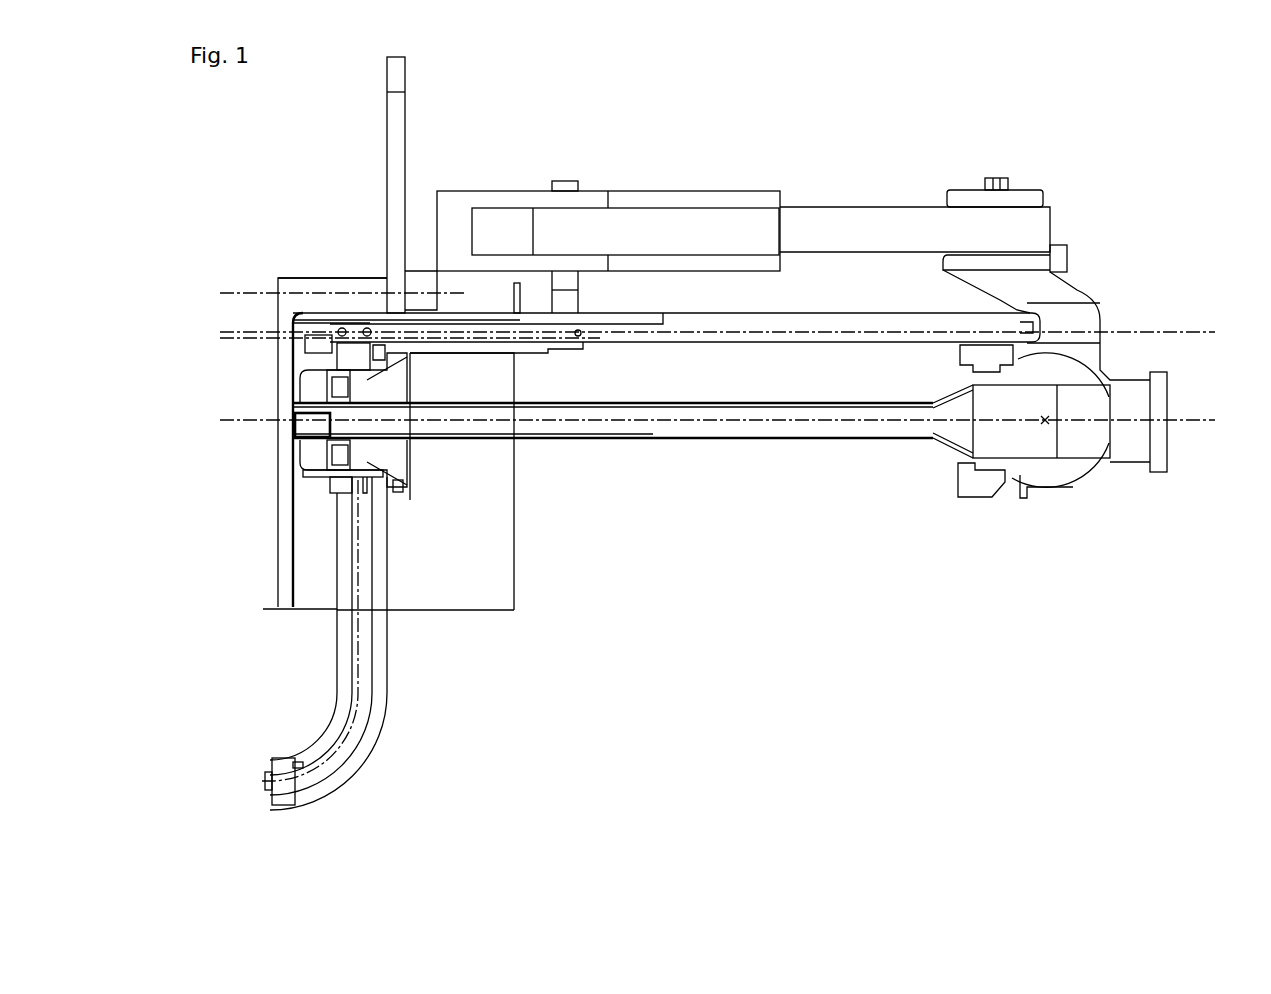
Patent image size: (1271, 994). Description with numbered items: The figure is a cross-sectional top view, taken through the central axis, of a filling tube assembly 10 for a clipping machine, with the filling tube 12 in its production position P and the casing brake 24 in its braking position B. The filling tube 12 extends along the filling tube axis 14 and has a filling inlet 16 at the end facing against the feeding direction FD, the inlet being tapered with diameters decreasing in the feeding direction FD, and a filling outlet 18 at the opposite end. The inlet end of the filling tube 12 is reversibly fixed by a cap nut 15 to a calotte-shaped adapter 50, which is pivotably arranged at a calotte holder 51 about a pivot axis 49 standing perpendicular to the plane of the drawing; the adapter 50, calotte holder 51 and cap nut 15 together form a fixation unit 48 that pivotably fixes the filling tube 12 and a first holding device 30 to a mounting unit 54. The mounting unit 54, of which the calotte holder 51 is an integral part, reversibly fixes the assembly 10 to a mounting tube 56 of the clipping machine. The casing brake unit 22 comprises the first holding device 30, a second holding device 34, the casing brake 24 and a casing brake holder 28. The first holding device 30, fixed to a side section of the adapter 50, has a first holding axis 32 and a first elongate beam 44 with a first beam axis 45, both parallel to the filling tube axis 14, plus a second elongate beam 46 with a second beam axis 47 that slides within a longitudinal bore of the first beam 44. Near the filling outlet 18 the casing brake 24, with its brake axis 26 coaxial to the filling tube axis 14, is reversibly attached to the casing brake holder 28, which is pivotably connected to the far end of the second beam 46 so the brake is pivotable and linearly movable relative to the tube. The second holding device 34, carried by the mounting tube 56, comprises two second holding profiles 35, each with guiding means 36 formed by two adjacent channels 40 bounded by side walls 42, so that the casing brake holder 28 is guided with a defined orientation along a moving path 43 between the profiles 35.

The filling tube assembly 10 is at (880, 631).
The filling tube 12 is at (750, 437).
The filling tube axis 14 is at (825, 422).
The cap nut 15 is at (972, 483).
The filling inlet 16 is at (955, 433).
The filling outlet 18 is at (300, 395).
The casing brake unit 22 is at (322, 264).
The casing brake 24 is at (340, 345).
The brake axis 26 is at (252, 418).
The casing brake holder 28 is at (337, 370).
The first holding device 30 is at (745, 280).
The first holding axis 32 is at (803, 327).
The second holding device 34 is at (487, 632).
The second holding profile 35 is at (385, 618).
The guiding means 36 is at (352, 706).
The channel 40 is at (368, 655).
The side wall 42 is at (365, 760).
The moving path 43 is at (335, 752).
The first elongate beam 44 is at (860, 318).
The first beam axis 45 is at (668, 328).
The second elongate beam 46 is at (432, 330).
The second beam axis 47 is at (390, 337).
The fixation unit 48 is at (1115, 499).
The pivot axis 49 is at (1048, 419).
The calotte-shaped adapter 50 is at (1057, 372).
The calotte holder 51 is at (1105, 472).
The mounting unit 54 is at (1036, 162).
The mounting tube 56 is at (640, 232).
The braking position B is at (447, 493).
The feeding direction FD is at (571, 502).
The production position P is at (733, 536).